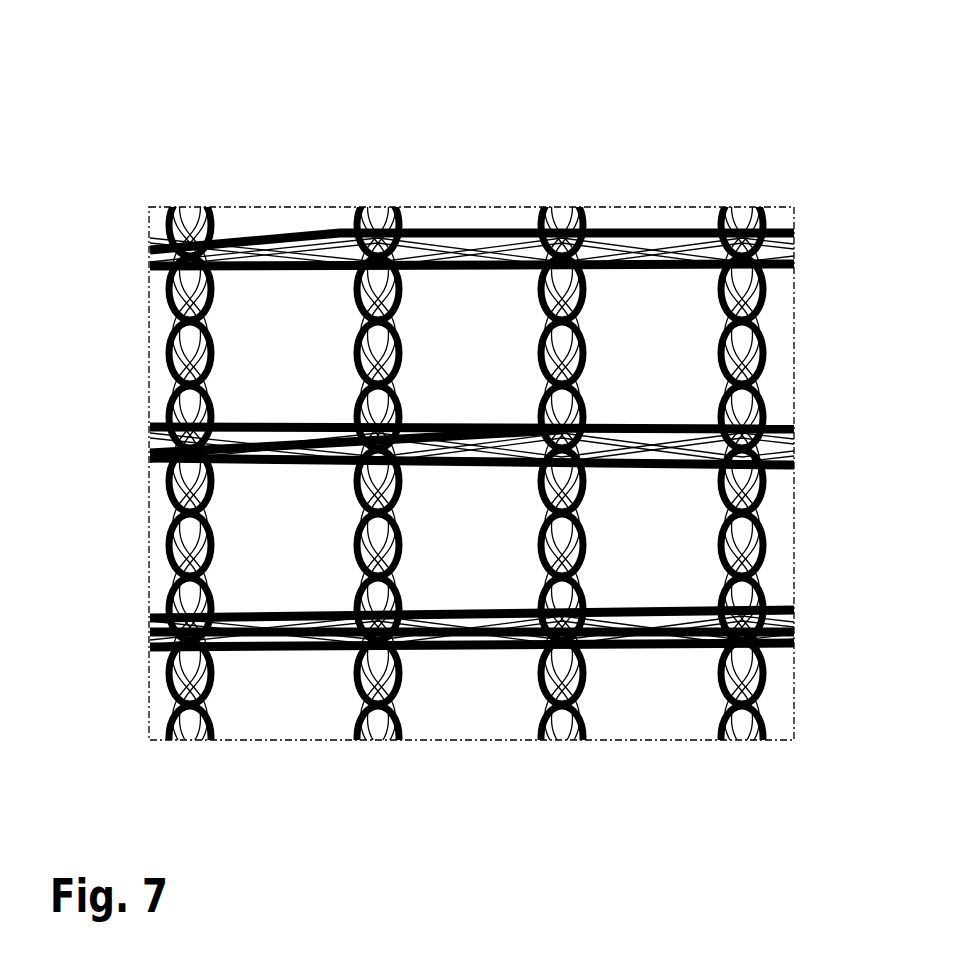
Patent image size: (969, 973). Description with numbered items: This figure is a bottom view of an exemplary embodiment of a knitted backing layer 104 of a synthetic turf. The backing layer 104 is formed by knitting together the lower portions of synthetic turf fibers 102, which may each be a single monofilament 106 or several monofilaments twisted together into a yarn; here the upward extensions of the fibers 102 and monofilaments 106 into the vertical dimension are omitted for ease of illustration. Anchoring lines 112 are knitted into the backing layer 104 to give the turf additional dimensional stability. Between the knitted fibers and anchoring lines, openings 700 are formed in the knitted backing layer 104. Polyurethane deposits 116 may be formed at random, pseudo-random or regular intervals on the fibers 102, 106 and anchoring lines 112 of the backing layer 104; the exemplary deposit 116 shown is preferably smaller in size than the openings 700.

The knitted backing layer 104 is at (797, 176).
The openings 700 is at (468, 300).
The PU deposit 116 is at (165, 384).
The synthetic turf fibers 102 is at (165, 570).
The single monofilament 106 is at (400, 495).
The anchoring lines 112 is at (465, 645).